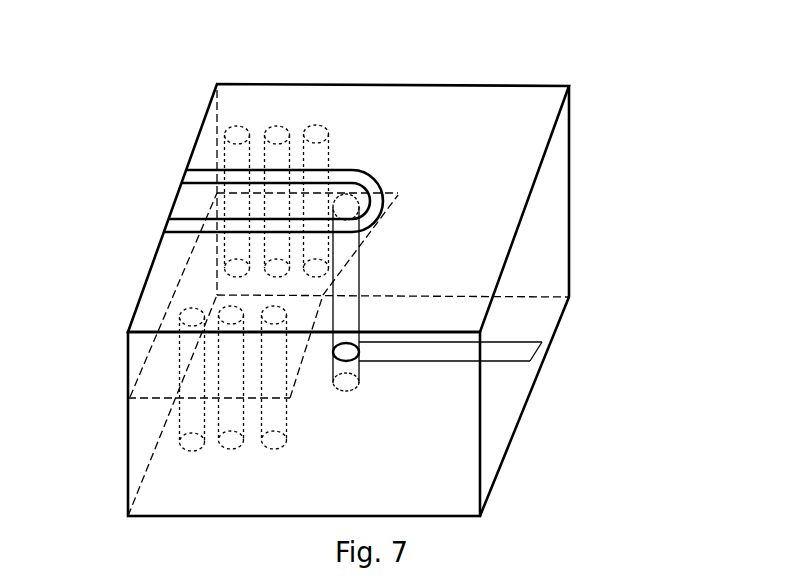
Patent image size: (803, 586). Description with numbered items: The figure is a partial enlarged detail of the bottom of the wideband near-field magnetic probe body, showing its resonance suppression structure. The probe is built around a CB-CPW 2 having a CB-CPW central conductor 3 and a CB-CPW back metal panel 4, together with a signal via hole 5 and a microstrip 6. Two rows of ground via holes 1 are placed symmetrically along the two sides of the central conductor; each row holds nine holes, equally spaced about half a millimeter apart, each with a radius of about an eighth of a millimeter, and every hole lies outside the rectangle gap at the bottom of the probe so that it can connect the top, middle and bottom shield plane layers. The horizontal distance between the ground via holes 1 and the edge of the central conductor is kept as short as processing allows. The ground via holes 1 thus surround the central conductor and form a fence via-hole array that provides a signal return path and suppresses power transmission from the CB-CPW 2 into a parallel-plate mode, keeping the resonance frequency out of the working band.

The ground via holes 1 is at (330, 245).
The CB-CPW 2 is at (217, 220).
The CB-CPW central conductor 3 is at (211, 182).
The CB-CPW back metal panel 4 is at (385, 300).
The signal via hole 5 is at (519, 327).
The microstrip 6 is at (410, 256).